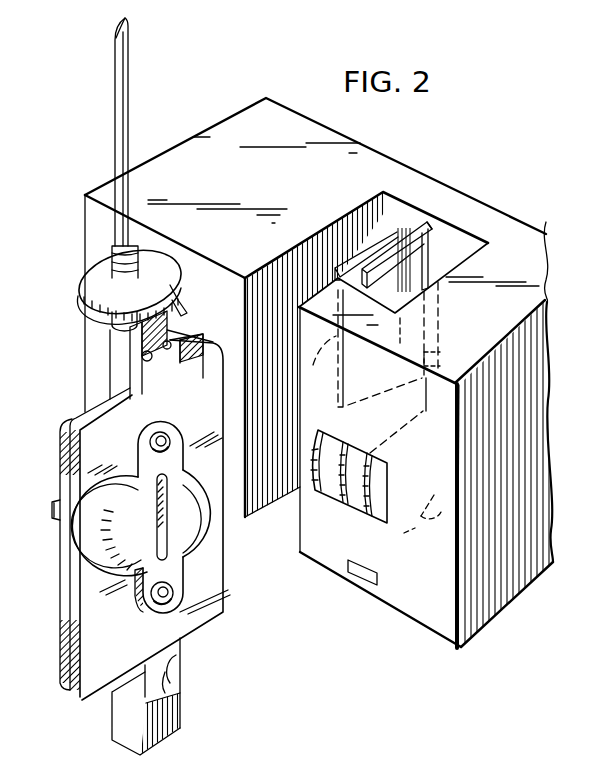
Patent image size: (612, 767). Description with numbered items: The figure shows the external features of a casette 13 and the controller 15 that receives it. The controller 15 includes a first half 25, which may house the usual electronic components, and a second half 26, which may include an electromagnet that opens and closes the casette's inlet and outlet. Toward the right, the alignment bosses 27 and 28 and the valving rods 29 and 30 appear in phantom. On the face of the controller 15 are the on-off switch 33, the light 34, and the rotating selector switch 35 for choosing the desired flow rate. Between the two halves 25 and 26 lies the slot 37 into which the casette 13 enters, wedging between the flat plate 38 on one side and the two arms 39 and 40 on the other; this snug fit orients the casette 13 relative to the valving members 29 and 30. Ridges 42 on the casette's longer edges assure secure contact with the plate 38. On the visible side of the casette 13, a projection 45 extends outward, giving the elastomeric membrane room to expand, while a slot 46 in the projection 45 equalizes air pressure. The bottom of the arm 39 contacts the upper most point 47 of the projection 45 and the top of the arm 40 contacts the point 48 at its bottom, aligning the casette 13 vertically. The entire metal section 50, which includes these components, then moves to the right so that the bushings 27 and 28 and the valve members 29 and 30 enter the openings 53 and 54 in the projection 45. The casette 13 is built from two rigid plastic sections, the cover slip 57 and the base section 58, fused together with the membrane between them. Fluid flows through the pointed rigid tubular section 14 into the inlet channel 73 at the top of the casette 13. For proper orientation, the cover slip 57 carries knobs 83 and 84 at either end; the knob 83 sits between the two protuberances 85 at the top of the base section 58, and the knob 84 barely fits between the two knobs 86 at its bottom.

The casette 13 is at (88, 702).
The pointed rigid tubular section 14 is at (118, 62).
The controller 15 is at (181, 124).
The first half 25 is at (243, 157).
The second half 26 is at (520, 252).
The alignment boss 27 is at (442, 365).
The alignment boss 28 is at (422, 533).
The valving rod 29 is at (438, 346).
The valving rod 30 is at (422, 493).
The on-off switch 33 is at (185, 293).
The light 34 is at (360, 577).
The rotating selector switch 35 is at (353, 512).
The slot 37 is at (291, 527).
The flat plate 38 is at (322, 362).
The arm 39 is at (425, 270).
The arm 40 is at (409, 432).
The ridges 42 is at (50, 516).
The projection 45 is at (130, 545).
The slot 46 is at (168, 540).
The upper most point 47 is at (151, 431).
The point 48 is at (160, 618).
The metal section 50 is at (352, 248).
The opening 53 is at (150, 451).
The opening 54 is at (148, 607).
The cover slip 57 is at (75, 423).
The base section of plastic 58 is at (58, 437).
The inlet channel 73 is at (130, 333).
The knob 83 is at (165, 331).
The knob 84 is at (168, 682).
The protuberances 85 is at (153, 360).
The knobs 86 is at (182, 680).